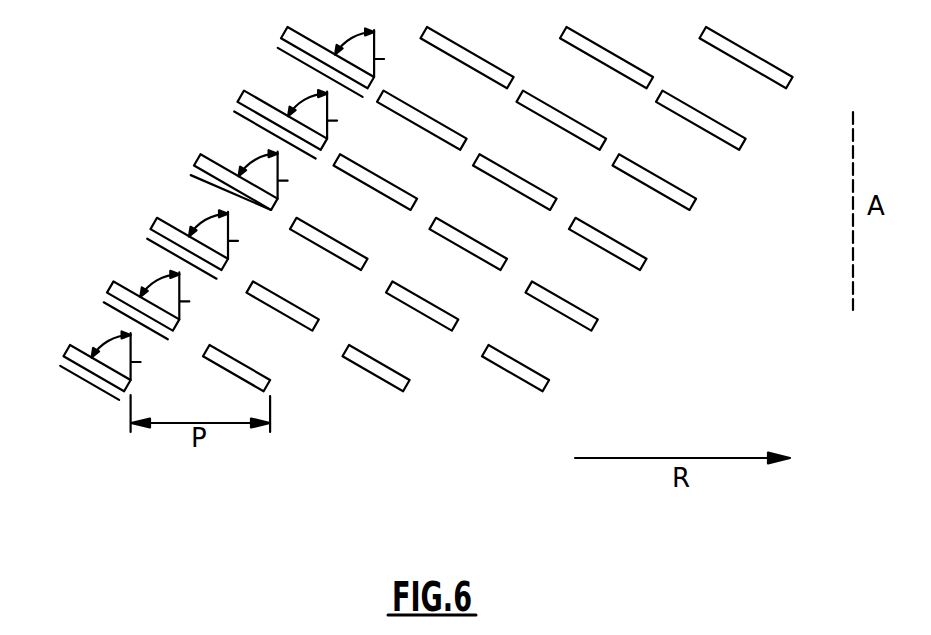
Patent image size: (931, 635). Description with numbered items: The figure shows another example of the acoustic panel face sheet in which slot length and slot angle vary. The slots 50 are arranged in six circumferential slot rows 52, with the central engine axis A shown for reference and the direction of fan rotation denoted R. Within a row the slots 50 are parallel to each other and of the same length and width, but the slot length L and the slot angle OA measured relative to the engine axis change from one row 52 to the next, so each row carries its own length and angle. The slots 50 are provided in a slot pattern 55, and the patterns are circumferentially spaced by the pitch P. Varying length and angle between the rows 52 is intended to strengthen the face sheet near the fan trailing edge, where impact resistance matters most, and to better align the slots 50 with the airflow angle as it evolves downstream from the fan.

The slot 50 is at (275, 208).
The slot row 52 is at (435, 221).
The slot pattern 55 is at (225, 221).